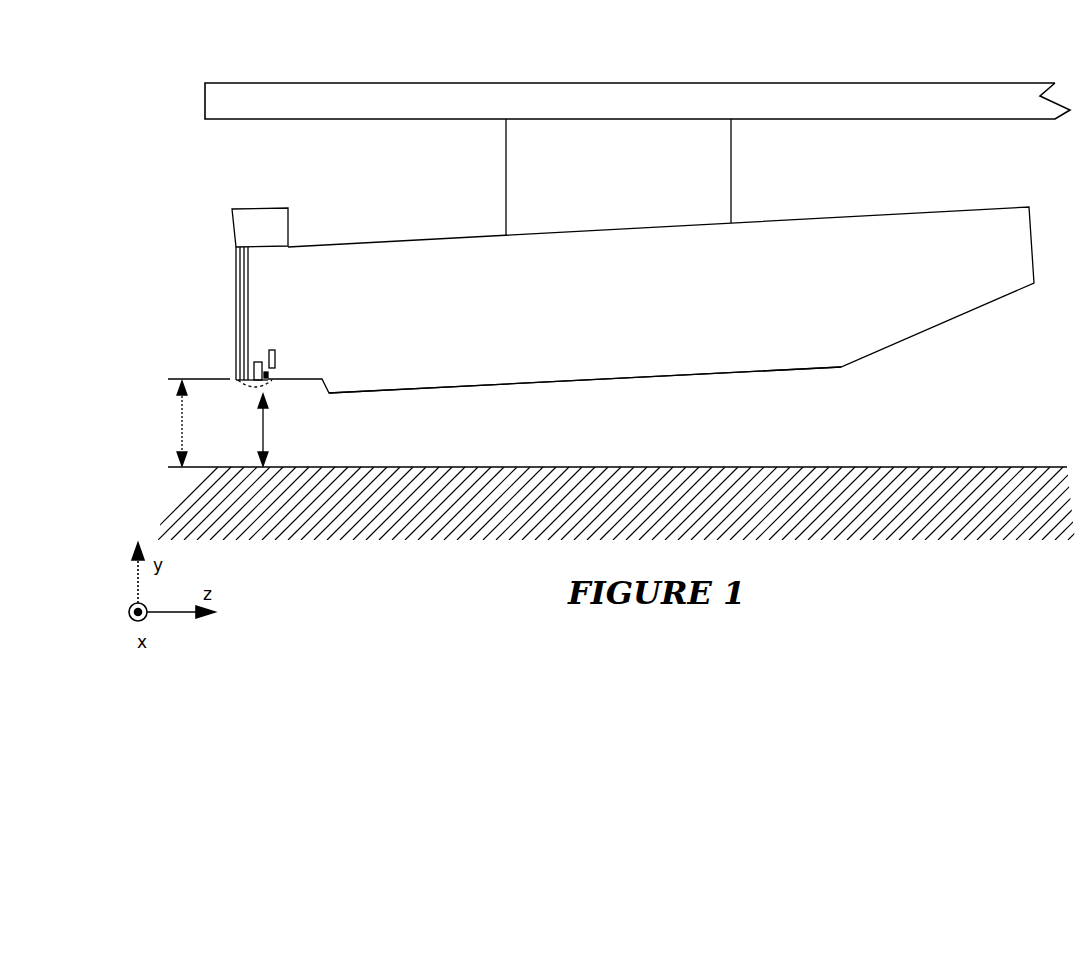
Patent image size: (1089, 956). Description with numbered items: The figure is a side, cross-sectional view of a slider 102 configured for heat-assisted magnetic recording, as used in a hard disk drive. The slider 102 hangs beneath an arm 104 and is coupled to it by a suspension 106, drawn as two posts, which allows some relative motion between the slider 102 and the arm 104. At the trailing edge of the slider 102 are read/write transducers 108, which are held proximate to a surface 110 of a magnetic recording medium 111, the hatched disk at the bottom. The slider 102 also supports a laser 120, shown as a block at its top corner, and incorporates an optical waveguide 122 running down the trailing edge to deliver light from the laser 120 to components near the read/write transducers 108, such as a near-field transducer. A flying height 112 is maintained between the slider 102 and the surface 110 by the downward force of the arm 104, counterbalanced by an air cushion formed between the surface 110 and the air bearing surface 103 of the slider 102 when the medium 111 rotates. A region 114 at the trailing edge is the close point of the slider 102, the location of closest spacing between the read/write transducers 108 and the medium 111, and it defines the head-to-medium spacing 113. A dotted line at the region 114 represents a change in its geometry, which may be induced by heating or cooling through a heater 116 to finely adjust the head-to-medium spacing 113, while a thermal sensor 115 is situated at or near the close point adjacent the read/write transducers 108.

The slider 102 is at (897, 222).
The air bearing surface 103 is at (450, 390).
The arm 104 is at (963, 92).
The suspension 106 is at (731, 167).
The read/write transducers 108 is at (252, 364).
The surface 110 is at (902, 467).
The magnetic recording medium 111 is at (920, 525).
The flying height 112 is at (179, 422).
The head-to-medium spacing 113 is at (240, 430).
The region 114 is at (272, 387).
The thermal sensor 115 is at (268, 374).
The heater 116 is at (271, 350).
The laser 120 is at (260, 220).
The optical waveguide 122 is at (243, 282).